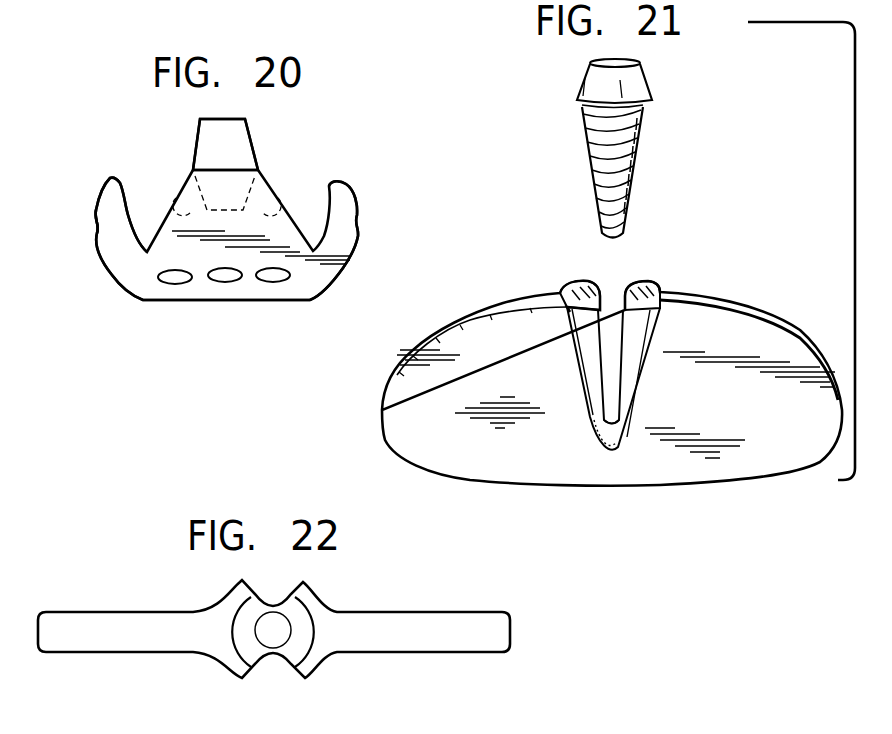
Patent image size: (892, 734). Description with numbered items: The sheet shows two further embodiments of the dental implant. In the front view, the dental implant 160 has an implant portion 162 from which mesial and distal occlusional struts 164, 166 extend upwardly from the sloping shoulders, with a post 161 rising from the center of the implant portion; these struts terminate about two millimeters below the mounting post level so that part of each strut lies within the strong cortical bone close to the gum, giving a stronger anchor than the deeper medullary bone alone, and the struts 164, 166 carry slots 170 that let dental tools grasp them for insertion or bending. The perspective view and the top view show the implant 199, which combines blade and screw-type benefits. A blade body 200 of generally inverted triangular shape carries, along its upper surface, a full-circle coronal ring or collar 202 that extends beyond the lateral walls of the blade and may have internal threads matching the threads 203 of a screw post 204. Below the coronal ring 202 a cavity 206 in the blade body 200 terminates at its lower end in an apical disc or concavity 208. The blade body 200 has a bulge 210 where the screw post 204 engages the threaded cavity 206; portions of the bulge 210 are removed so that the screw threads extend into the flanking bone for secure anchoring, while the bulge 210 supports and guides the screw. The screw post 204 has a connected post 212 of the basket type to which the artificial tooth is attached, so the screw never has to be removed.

In FIG. 20, the dental implant 160 is at (140, 139).
In FIG. 20, the post 161 is at (247, 147).
In FIG. 20, the implant portion 162 is at (98, 182).
In FIG. 20, the mesial occlusional strut 164 is at (112, 252).
In FIG. 20, the distal occlusional strut 166 is at (342, 240).
In FIG. 20, the slots 170 is at (98, 228).
In FIG. 21, the implant 199 is at (730, 156).
In FIG. 21, the blade body 200 is at (759, 298).
In FIG. 22, the blade body 200 is at (436, 660).
In FIG. 21, the coronal ring or collar 202 is at (641, 284).
In FIG. 22, the coronal ring or collar 202 is at (310, 662).
In FIG. 21, the threads 203 is at (586, 280).
In FIG. 21, the screw post 204 is at (604, 148).
In FIG. 21, the cavity 206 is at (602, 389).
In FIG. 21, the apical disc or concavity 208 is at (620, 430).
In FIG. 22, the apical disc or concavity 208 is at (273, 632).
In FIG. 21, the bulge 210 is at (580, 347).
In FIG. 21, the connected post 212 is at (630, 92).